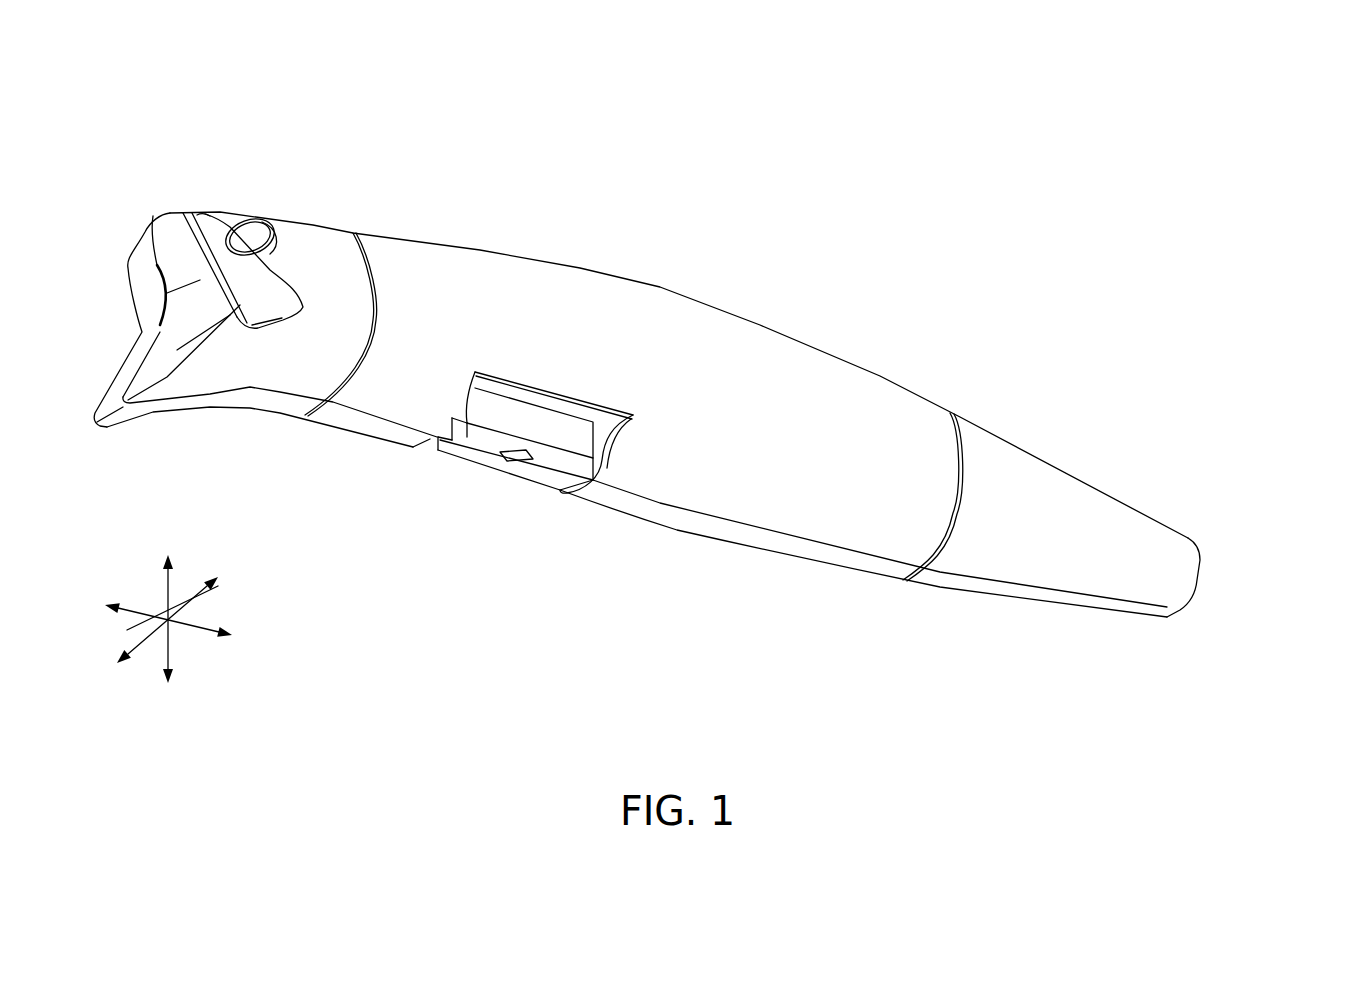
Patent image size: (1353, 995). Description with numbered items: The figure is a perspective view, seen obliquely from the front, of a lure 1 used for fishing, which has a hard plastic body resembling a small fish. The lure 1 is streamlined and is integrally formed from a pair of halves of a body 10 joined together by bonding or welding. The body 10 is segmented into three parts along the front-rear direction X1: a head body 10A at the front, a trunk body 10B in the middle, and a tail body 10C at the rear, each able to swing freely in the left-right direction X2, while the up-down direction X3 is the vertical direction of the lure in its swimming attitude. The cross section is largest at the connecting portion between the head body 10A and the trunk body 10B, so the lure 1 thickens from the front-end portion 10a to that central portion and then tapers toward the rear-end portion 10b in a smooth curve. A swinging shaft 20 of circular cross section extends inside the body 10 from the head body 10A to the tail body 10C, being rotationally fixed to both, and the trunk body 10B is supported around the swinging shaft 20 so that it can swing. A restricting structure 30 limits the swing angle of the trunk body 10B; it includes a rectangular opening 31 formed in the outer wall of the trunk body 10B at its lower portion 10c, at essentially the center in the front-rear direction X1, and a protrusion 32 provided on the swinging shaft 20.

The lure 1 is at (438, 196).
The body 10 is at (703, 347).
The head body 10A is at (302, 218).
The trunk body 10B is at (580, 267).
The tail body 10C is at (1073, 477).
The front-end portion 10a is at (163, 232).
The rear-end portion 10b is at (1200, 580).
The lower portion 10c is at (592, 493).
The swinging shaft 20 is at (577, 410).
The restricting structure 30 is at (461, 474).
The opening 31 is at (502, 396).
The protrusion 32 is at (553, 437).
The front-rear direction X1 is at (198, 630).
The left-right direction X2 is at (150, 642).
The up-down direction X3 is at (168, 595).